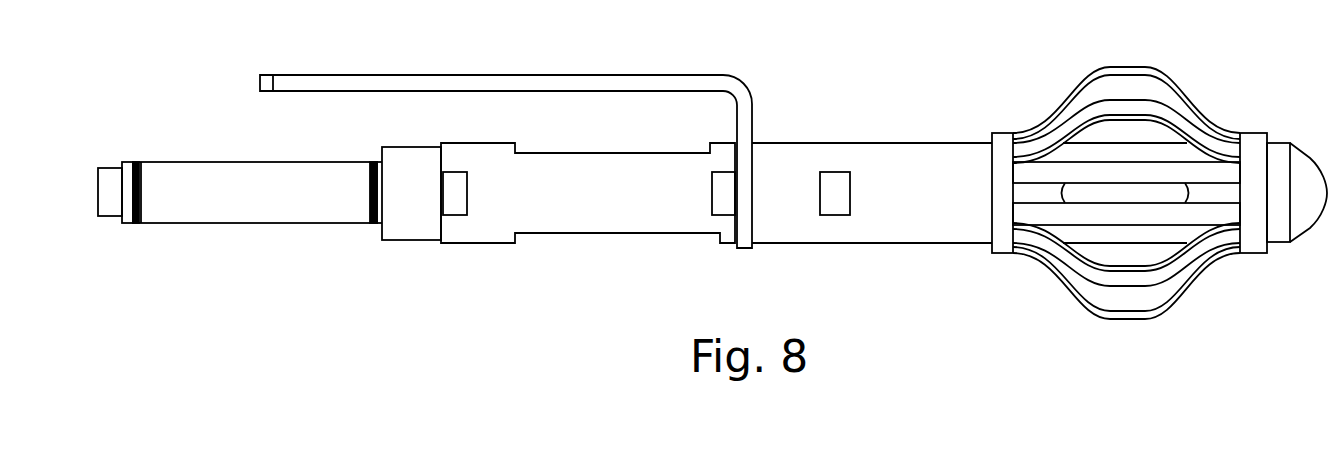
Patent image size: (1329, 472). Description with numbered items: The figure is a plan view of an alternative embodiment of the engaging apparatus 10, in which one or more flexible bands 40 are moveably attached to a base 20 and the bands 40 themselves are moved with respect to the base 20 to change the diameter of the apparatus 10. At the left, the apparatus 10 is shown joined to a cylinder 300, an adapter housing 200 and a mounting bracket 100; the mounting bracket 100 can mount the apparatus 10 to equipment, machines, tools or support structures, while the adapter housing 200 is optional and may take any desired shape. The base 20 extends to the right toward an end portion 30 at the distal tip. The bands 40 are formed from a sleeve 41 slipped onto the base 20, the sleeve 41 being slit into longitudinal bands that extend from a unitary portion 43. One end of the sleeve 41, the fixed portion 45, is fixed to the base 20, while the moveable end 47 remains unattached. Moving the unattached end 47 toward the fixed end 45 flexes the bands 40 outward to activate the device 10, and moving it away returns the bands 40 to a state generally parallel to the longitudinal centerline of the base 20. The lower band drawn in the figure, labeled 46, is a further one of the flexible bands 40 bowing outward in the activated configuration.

The engaging apparatus 10 is at (935, 102).
The base 20 is at (858, 233).
The end portion 30 is at (1280, 152).
The flexible bands 40 is at (1188, 92).
The sleeve 41 is at (1253, 147).
The unitary portion 43 is at (1003, 145).
The fixed portion 45 is at (1003, 246).
The outer strut 46 is at (1130, 316).
The moveable end 47 is at (1250, 246).
The mounting bracket 100 is at (292, 84).
The adapter housing 200 is at (570, 225).
The cylinder 300 is at (212, 213).